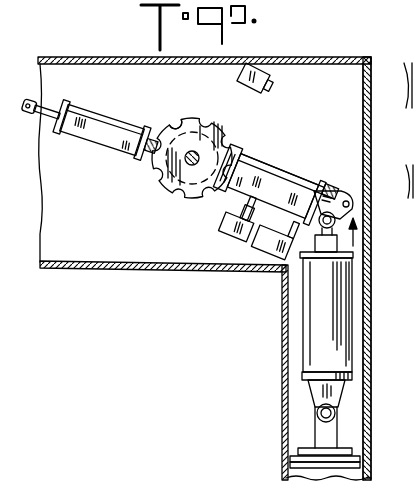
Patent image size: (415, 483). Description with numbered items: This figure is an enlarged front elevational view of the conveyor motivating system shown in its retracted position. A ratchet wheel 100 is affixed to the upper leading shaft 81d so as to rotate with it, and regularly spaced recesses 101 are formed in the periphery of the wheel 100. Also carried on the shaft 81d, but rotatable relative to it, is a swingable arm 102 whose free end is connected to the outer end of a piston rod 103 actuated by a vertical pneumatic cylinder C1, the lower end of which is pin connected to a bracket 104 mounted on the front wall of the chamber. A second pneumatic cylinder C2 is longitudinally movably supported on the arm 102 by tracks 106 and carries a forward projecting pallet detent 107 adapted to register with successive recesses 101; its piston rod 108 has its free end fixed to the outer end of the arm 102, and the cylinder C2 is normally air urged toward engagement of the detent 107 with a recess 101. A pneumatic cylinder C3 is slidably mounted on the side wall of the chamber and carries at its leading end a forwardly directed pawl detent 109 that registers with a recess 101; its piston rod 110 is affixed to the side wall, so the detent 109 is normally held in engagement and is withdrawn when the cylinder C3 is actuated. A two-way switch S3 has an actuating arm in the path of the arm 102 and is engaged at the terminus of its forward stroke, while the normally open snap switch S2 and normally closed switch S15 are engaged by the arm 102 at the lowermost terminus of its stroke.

The piston rod 110 is at (59, 110).
The pneumatic cylinder C3 is at (107, 115).
The pawl detent 109 is at (147, 138).
The recesses 101 is at (174, 118).
The ratchet wheel 100 is at (217, 126).
The swingable arm 102 is at (242, 146).
The tracks 106 is at (263, 160).
The second pneumatic cylinder C2 is at (280, 156).
The two-way switch S3 is at (269, 62).
The piston rod 108 is at (336, 187).
The piston rod 103 is at (355, 246).
The upper leading shaft 81d is at (186, 160).
The pallet detent 107 is at (232, 160).
The normally open switch S2 is at (225, 233).
The normally closed switch S15 is at (268, 243).
The vertical pneumatic cylinder C1 is at (316, 294).
The bracket 104 is at (323, 431).